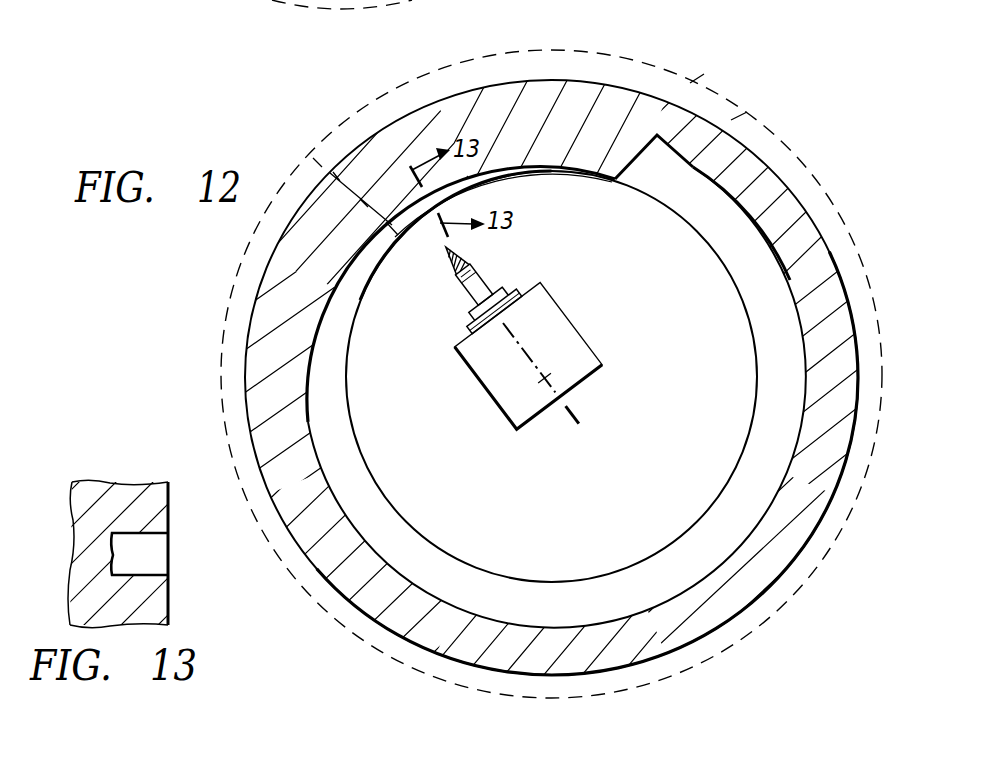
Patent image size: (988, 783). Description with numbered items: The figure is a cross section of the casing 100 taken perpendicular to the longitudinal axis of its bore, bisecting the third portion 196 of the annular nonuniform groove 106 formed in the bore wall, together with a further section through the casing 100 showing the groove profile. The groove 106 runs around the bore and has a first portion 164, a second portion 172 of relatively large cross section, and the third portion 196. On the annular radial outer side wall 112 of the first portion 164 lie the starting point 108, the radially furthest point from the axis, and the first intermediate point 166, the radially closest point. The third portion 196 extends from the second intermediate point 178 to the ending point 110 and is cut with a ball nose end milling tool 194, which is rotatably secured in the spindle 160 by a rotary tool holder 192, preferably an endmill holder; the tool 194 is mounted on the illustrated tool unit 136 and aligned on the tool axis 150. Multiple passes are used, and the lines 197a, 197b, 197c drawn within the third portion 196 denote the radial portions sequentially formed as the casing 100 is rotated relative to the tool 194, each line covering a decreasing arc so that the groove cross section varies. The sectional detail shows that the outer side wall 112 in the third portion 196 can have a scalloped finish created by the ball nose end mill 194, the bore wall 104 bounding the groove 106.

In FIG. 12, the casing 100 is at (346, 144).
In FIG. 13, the casing 100 is at (88, 482).
In FIG. 12, the inner tube 104 is at (413, 528).
In FIG. 12, the annular nonuniform groove 106 is at (483, 578).
In FIG. 12, the starting point 108 is at (652, 132).
In FIG. 12, the ending point 110 is at (618, 186).
In FIG. 13, the annular radial outer side wall 112 is at (117, 556).
In FIG. 12, the drive body 136 is at (592, 321).
In FIG. 12, the axis 150 is at (574, 406).
In FIG. 12, the spindle 160 is at (468, 323).
In FIG. 12, the first portion 164 is at (718, 97).
In FIG. 12, the first intermediate point 166 is at (688, 170).
In FIG. 12, the second portion 172 is at (775, 147).
In FIG. 12, the second intermediate point 178 is at (386, 222).
In FIG. 12, the rotary tool holder 192 is at (498, 286).
In FIG. 12, the ball nose end milling tool 194 is at (478, 267).
In FIG. 12, the third portion 196 is at (623, 54).
In FIG. 13, the third portion 196 is at (157, 544).
In FIG. 12, the line 197a is at (513, 176).
In FIG. 12, the line 197b is at (404, 236).
In FIG. 12, the line 197c is at (384, 244).